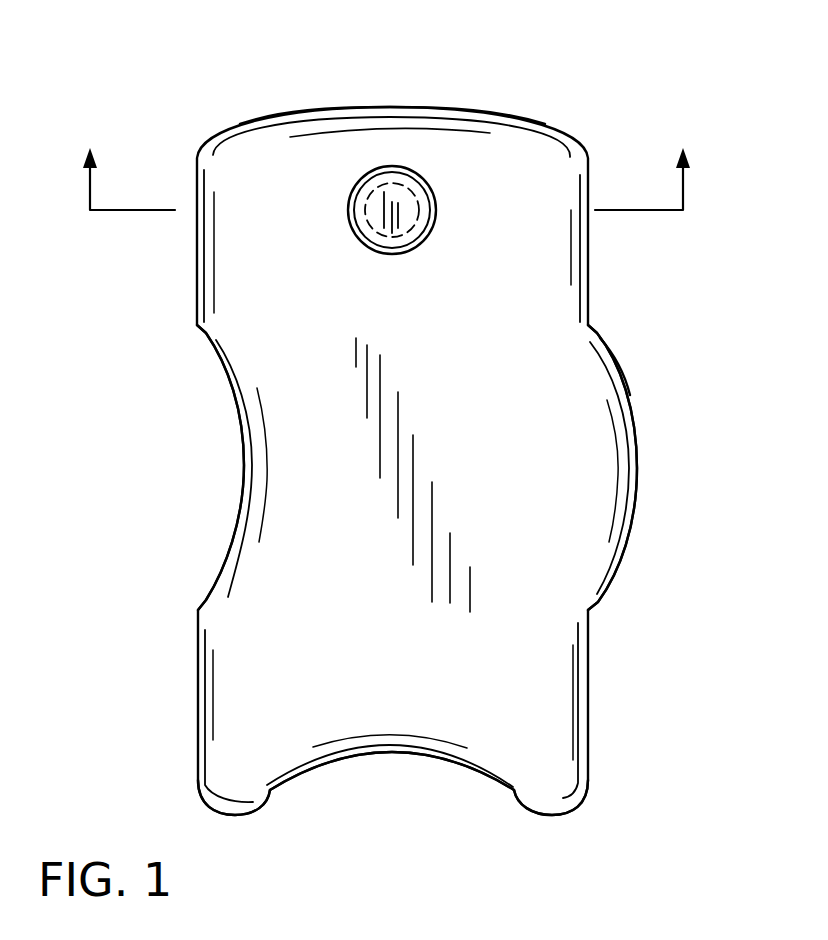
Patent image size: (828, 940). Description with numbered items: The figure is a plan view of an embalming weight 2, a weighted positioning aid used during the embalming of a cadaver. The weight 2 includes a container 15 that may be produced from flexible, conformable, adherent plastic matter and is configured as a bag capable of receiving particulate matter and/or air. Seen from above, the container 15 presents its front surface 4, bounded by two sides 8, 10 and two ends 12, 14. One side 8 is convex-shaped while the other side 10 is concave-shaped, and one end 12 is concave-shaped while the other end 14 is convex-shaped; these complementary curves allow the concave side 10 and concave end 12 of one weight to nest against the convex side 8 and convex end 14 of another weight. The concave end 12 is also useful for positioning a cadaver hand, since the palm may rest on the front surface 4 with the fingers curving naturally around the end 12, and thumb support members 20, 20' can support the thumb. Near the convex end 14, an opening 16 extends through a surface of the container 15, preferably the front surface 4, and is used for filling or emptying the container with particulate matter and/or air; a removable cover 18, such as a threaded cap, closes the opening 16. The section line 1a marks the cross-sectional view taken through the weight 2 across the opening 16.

The embalming weight 2 is at (148, 103).
The front surface 4 is at (470, 303).
The side 8 is at (637, 478).
The side 10 is at (240, 482).
The end 12 is at (408, 755).
The end 14 is at (423, 108).
The container 15 is at (643, 383).
The opening 16 is at (363, 208).
The removable cover 18 is at (420, 193).
The thumb support member 20 is at (174, 793).
The thumb support member 20' is at (614, 793).
The section line 1a is at (386, 160).